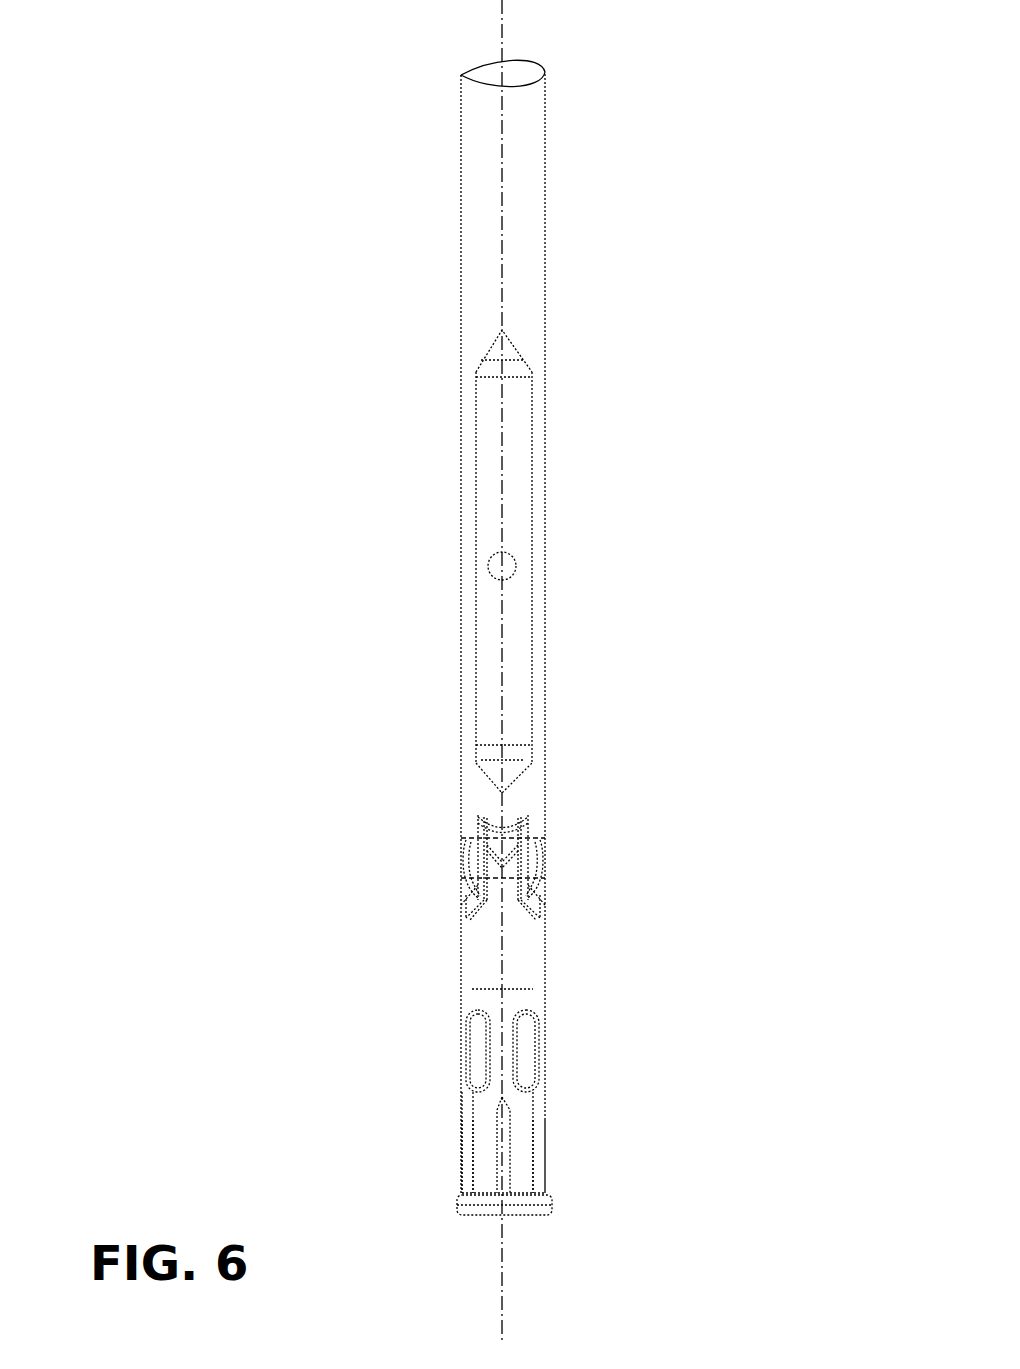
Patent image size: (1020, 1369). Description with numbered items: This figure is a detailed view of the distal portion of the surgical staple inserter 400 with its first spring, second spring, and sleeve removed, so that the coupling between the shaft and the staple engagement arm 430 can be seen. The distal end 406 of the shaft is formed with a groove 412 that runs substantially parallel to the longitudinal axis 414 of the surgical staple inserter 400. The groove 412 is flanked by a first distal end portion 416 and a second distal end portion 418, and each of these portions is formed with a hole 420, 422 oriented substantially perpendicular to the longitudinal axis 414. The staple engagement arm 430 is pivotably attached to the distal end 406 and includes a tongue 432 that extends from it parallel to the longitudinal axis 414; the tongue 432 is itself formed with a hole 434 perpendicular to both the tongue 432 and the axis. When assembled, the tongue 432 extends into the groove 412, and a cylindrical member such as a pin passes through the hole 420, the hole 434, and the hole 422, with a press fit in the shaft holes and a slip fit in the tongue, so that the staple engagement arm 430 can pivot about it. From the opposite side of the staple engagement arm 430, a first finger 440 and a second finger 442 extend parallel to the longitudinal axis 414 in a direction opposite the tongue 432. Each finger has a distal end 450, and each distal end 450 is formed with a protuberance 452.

The surgical staple inserter 400 is at (348, 204).
The longitudinal axis 414 is at (504, 224).
The distal end 406 is at (521, 786).
The groove 412 is at (533, 820).
The tongue 432 is at (540, 853).
The hole 434 is at (483, 825).
The hole 420 is at (468, 883).
The hole 422 is at (537, 883).
The first distal end portion 416 is at (463, 897).
The second distal end portion 418 is at (541, 897).
The staple engagement arm 430 is at (475, 977).
The first finger 440 is at (480, 1127).
The second finger 442 is at (525, 1127).
The distal end 450 is at (467, 1182).
The protuberance 452 is at (463, 1208).